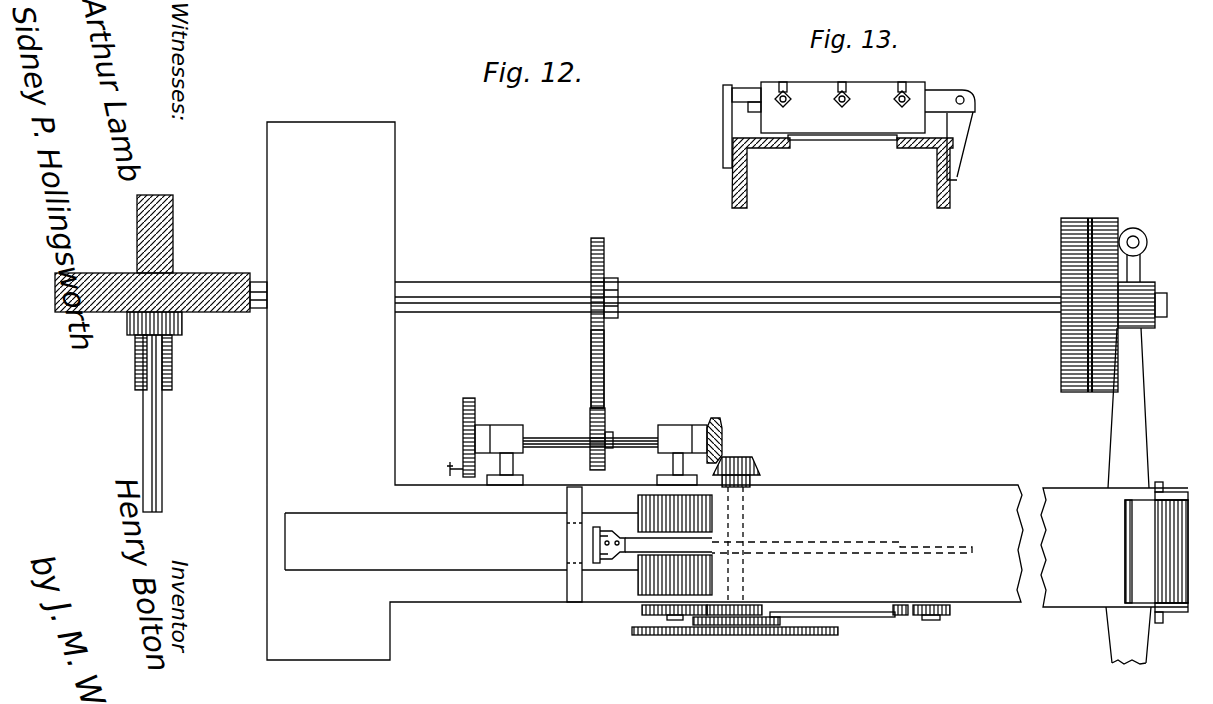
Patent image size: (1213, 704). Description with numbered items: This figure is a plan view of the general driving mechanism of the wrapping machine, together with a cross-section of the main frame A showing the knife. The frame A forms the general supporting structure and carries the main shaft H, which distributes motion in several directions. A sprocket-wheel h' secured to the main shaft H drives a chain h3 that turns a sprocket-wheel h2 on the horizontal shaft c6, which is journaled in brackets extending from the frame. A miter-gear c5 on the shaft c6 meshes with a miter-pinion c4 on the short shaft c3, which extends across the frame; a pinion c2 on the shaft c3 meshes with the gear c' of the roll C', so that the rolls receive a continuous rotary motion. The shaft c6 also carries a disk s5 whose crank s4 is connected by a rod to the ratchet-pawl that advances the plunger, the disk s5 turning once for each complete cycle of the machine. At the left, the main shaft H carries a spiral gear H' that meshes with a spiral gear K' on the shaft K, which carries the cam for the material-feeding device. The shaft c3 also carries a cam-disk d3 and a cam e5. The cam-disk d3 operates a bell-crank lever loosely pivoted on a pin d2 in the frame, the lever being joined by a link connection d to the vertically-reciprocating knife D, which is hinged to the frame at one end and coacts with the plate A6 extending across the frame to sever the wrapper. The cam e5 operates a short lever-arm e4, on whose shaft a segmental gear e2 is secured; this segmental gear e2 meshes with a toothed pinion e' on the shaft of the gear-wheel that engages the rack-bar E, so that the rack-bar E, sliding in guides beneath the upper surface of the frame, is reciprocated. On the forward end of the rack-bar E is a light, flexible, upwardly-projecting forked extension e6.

In FIG. 12, the frame A is at (340, 276).
In FIG. 12, the spiral gear H' is at (166, 234).
In FIG. 12, the spiral gear K' is at (161, 304).
In FIG. 12, the shaft K is at (143, 423).
In FIG. 12, the main shaft H is at (781, 441).
In FIG. 12, the sprocket-wheel h' is at (607, 321).
In FIG. 12, the chain h3 is at (604, 378).
In FIG. 12, the sprocket-wheel h2 is at (590, 420).
In FIG. 12, the disk s5 is at (463, 418).
In FIG. 12, the crank s4 is at (453, 466).
In FIG. 12, the horizontal shaft c6 is at (566, 449).
In FIG. 12, the miter-gear c5 is at (719, 418).
In FIG. 12, the short shaft c3 is at (738, 458).
In FIG. 12, the miter-pinion c4 is at (760, 469).
In FIG. 12, the plate A6 is at (567, 541).
In FIG. 13, the plate A6 is at (793, 141).
In FIG. 12, the forked extension e6 is at (602, 545).
In FIG. 12, the rack-bar E is at (639, 552).
In FIG. 12, the roll C' is at (798, 545).
In FIG. 12, the gear c' is at (655, 615).
In FIG. 12, the pinion c2 is at (762, 610).
In FIG. 12, the cam-disk d3 is at (669, 636).
In FIG. 12, the cam e5 is at (709, 626).
In FIG. 12, the lever-arm e4 is at (795, 620).
In FIG. 12, the segmental gear e2 is at (889, 617).
In FIG. 12, the toothed pinion e' is at (940, 617).
In FIG. 12, the pin d2 is at (1156, 552).
In FIG. 13, the link connection d is at (732, 125).
In FIG. 13, the knife D is at (868, 131).